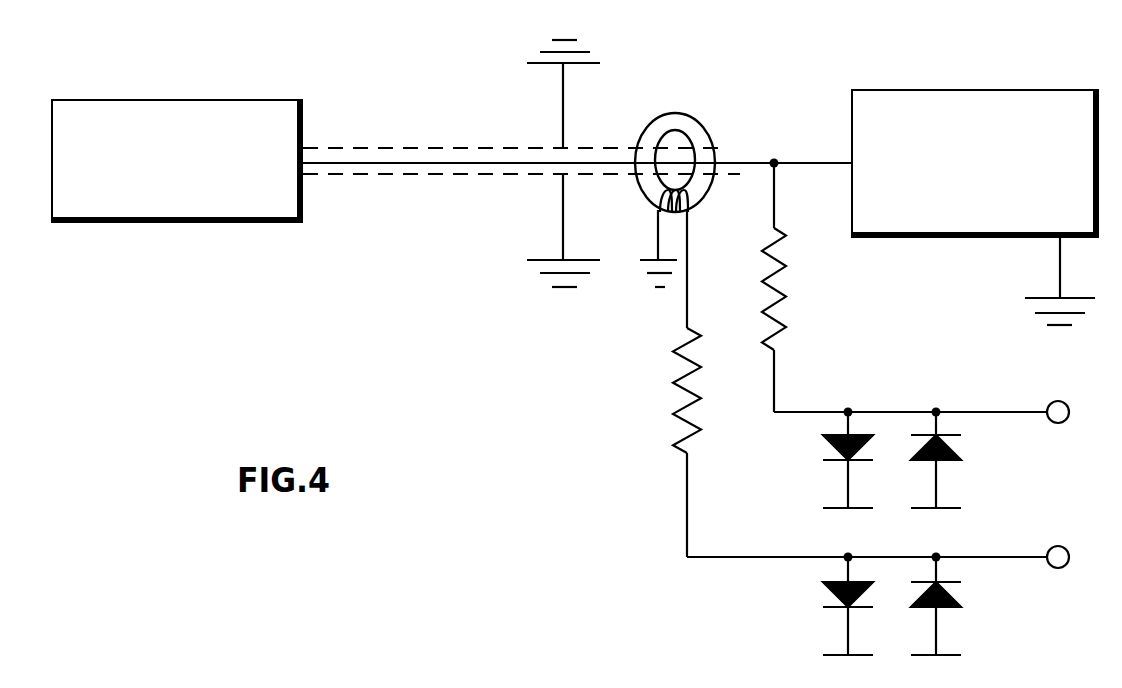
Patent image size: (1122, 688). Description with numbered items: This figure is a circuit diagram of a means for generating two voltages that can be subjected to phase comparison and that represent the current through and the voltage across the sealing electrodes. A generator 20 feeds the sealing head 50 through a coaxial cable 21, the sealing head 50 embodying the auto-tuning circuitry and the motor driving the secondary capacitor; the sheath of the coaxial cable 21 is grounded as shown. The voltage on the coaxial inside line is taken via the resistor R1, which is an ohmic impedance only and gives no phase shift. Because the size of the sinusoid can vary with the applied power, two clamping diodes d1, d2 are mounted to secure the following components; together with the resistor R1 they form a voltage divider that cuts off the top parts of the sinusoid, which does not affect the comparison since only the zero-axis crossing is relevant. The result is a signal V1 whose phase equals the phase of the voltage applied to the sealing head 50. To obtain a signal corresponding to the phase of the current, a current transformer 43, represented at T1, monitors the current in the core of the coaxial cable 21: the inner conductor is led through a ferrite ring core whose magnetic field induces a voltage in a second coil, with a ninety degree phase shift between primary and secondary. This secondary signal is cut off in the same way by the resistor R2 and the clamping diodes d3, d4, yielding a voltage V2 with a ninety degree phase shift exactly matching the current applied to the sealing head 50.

The generator 20 is at (160, 100).
The coaxial cable 21 is at (398, 175).
The current transformer 43 is at (673, 116).
The sealing head 50 is at (1078, 116).
The current transformer T1 is at (738, 112).
The resistor R1 is at (789, 285).
The resistor R2 is at (672, 386).
The clamping diode d1 is at (831, 442).
The clamping diode d2 is at (948, 448).
The clamping diode d3 is at (830, 589).
The clamping diode d4 is at (945, 590).
The voltage signal V1 is at (948, 412).
The voltage signal V2 is at (904, 557).